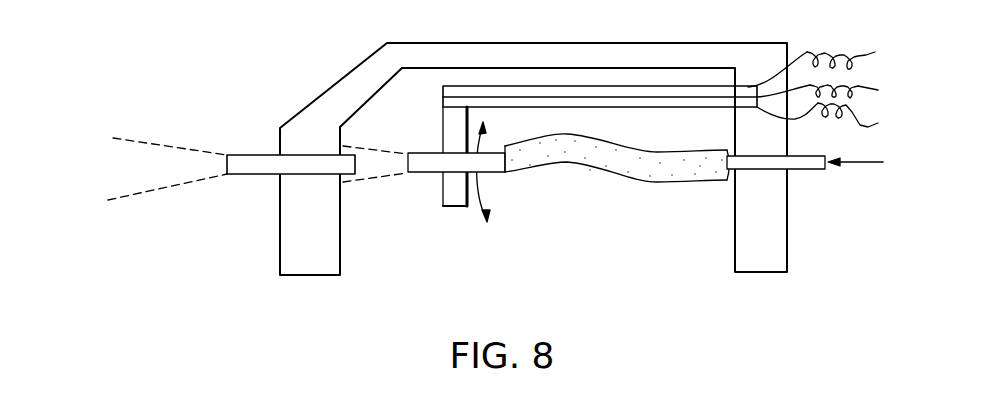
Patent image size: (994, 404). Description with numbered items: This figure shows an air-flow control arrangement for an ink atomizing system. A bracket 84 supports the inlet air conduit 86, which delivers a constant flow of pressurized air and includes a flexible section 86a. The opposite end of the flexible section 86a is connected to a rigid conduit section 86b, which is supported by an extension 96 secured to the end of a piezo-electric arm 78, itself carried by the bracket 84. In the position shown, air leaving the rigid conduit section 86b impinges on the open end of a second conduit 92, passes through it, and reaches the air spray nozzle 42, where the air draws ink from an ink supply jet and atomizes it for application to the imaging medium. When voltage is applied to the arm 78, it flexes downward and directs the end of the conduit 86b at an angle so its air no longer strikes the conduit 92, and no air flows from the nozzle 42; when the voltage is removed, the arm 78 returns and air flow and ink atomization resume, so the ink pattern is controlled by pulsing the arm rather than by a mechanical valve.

The air spray nozzle 42 is at (227, 176).
The piezo-electric arm 78 is at (620, 106).
The bracket 84 is at (732, 43).
The inlet air conduit 86 is at (793, 170).
The flexible section 86a is at (645, 182).
The rigid conduit section 86b is at (425, 176).
The conduit 92 is at (270, 176).
The extension 96 is at (443, 130).